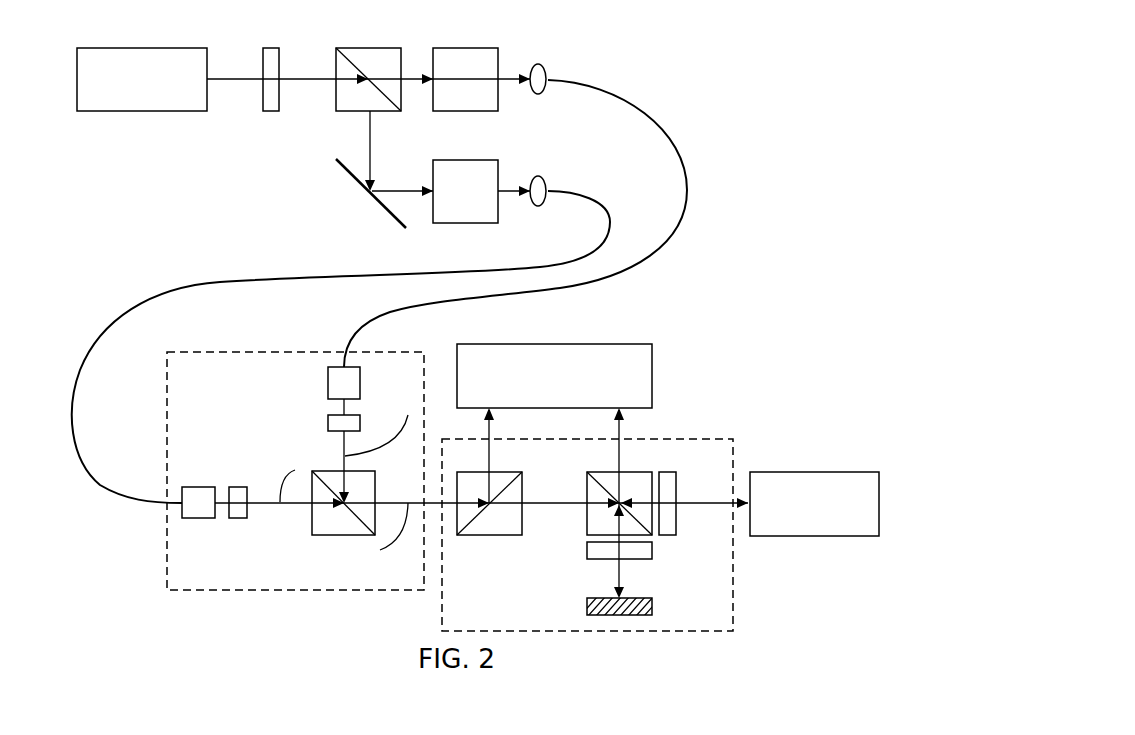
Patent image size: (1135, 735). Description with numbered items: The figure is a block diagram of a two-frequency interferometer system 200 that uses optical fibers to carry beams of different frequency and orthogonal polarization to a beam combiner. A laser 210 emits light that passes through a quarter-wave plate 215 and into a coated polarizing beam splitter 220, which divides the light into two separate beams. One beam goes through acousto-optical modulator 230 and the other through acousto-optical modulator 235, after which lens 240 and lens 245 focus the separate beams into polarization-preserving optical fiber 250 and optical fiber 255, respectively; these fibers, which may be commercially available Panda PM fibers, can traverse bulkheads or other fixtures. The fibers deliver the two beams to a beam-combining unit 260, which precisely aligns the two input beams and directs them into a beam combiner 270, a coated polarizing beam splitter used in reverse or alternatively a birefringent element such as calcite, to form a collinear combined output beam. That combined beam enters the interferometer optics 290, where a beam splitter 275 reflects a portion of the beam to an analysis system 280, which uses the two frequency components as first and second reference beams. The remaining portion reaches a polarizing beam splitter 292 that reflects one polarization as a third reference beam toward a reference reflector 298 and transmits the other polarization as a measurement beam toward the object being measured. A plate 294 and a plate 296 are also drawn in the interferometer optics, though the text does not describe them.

The interferometer system 200 is at (740, 58).
The laser 210 is at (126, 48).
The quarter-wave plate 215 is at (272, 48).
The coated polarizing beam splitter 220 is at (352, 48).
The acousto-optical modulator 230 is at (457, 48).
The acousto-optical modulator 235 is at (450, 160).
The lens 240 is at (540, 64).
The lens 245 is at (540, 176).
The optical fiber 250 is at (668, 126).
The optical fiber 255 is at (592, 196).
The beam-combining unit 260 is at (250, 352).
The beam combiner 270 is at (312, 522).
The beam splitter 275 is at (478, 536).
The analysis system 280 is at (505, 344).
The interferometer optics 290 is at (710, 440).
The polarizing beam splitter 292 is at (603, 472).
The quarter-wave plate 294 is at (672, 472).
The optical plate 296 is at (586, 548).
The reference reflector 298 is at (652, 607).